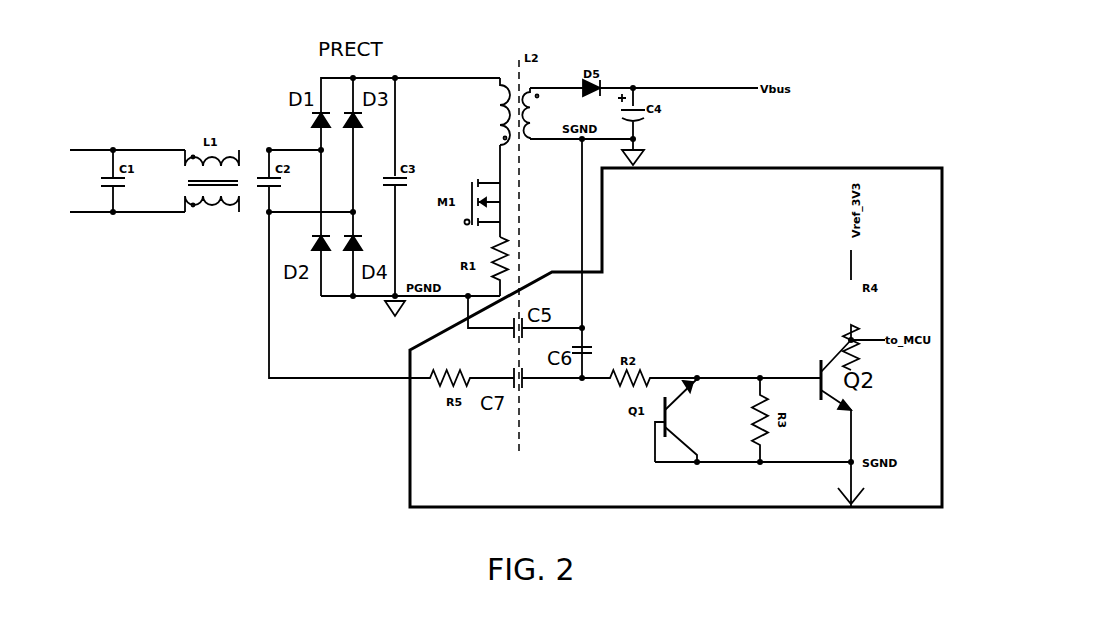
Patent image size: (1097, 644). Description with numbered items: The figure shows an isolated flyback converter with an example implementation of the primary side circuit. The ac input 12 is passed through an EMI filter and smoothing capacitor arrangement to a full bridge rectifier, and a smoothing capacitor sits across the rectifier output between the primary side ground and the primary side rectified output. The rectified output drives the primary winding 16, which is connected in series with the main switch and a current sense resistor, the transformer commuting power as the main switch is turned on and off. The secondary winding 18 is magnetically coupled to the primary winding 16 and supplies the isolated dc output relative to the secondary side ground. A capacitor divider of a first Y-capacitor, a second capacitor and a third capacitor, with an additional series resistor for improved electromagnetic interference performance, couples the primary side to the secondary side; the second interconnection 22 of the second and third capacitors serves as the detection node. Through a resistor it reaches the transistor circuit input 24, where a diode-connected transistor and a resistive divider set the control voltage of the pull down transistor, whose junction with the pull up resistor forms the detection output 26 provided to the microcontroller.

The ac input 12 is at (61, 187).
The primary winding 16 is at (497, 107).
The secondary winding 18 is at (532, 90).
The second interconnection 22 is at (582, 380).
The transistor circuit input 24 is at (697, 378).
The detection output 26 is at (851, 339).